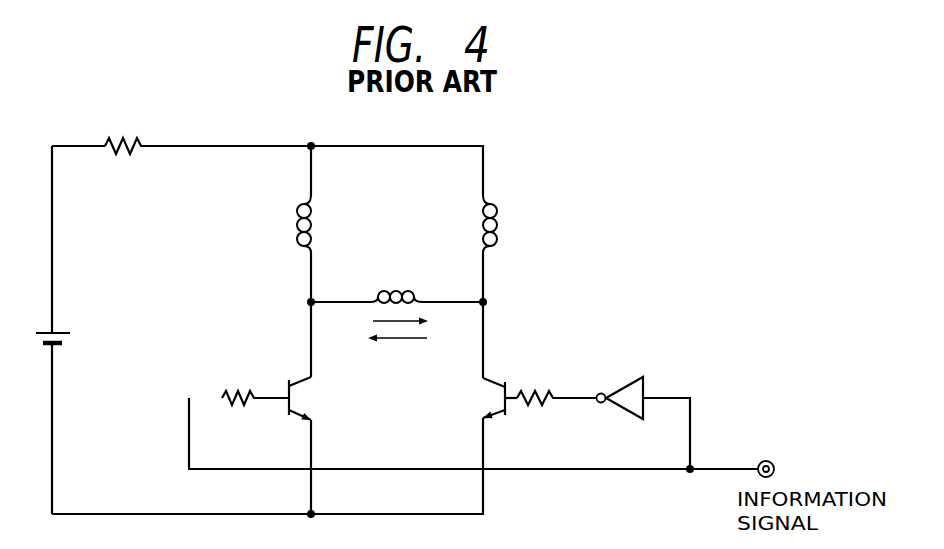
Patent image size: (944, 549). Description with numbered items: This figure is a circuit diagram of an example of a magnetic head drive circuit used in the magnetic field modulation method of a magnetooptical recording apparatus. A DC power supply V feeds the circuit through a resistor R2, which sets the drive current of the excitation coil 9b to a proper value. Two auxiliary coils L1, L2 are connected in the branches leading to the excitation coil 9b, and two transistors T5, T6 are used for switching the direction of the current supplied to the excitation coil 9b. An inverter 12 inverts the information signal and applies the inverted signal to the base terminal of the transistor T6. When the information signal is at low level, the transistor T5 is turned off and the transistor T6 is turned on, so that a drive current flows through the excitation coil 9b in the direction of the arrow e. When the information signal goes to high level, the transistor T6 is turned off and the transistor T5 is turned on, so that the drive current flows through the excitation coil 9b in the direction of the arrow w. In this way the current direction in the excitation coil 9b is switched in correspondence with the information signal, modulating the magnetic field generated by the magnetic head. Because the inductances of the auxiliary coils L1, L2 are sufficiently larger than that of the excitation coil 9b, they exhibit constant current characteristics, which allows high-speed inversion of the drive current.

The resistor R2 is at (125, 132).
The DC power supply V is at (65, 343).
The auxiliary coil L1 is at (322, 224).
The auxiliary coil L2 is at (470, 224).
The excitation coil 9b is at (405, 292).
The arrow e is at (409, 320).
The arrow w is at (389, 336).
The transistor T5 is at (280, 398).
The transistor T6 is at (507, 398).
The inverter 12 is at (638, 377).